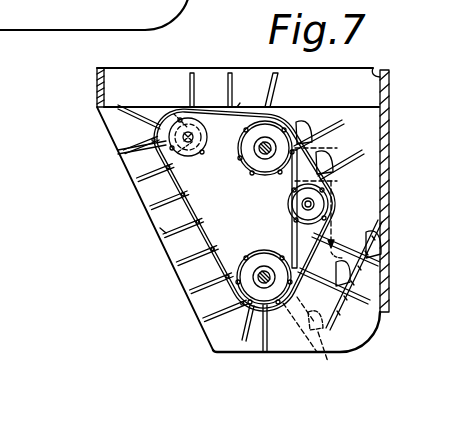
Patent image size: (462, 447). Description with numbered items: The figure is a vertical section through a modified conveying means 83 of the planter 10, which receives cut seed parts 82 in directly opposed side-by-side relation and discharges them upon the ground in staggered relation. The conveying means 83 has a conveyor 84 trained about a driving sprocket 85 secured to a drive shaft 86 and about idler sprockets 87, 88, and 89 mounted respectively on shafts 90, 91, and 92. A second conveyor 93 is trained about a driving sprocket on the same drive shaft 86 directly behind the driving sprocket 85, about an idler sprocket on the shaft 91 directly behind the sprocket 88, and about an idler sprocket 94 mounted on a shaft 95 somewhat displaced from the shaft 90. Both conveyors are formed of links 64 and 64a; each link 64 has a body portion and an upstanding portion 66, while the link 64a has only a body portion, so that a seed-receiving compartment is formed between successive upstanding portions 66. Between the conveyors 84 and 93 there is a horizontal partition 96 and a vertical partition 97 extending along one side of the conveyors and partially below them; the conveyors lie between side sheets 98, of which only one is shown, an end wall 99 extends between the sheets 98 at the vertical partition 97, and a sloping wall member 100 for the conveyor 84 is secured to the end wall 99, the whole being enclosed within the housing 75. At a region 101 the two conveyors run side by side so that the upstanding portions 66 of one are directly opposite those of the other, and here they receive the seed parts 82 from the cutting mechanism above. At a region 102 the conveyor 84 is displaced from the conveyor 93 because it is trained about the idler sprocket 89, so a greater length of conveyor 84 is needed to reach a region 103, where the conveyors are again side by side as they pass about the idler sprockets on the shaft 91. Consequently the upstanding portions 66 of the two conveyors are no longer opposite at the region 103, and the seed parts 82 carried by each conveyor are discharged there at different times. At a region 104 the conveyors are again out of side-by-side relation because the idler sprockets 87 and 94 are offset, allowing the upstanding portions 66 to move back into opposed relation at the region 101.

The machine frame 10 is at (18, 24).
The housing 75 is at (97, 86).
The link 64 is at (193, 73).
The link 64a is at (230, 73).
The horizontal partition 96 is at (276, 73).
The region 101 is at (238, 107).
The conveyor 93 is at (152, 154).
The shaft 90 is at (194, 134).
The idler sprocket 87 is at (192, 152).
The shaft 95 is at (184, 108).
The idler sprocket 94 is at (158, 140).
The driving sprocket 85 is at (250, 162).
The drive shaft 86 is at (264, 160).
The shaft 92 is at (305, 208).
The idler sprocket 89 is at (290, 204).
The idler sprocket 88 is at (256, 253).
The shaft 91 is at (266, 252).
The upstanding portions 66 is at (176, 254).
The region 104 is at (158, 226).
The conveying means 83 is at (130, 200).
The seed parts 82 is at (332, 140).
The conveyor 84 is at (283, 114).
The region 102 is at (340, 179).
The vertical partition 97 is at (364, 182).
The end wall 99 is at (386, 272).
The sloping wall member 100 is at (372, 284).
The side sheets 98 is at (206, 320).
The region 103 is at (275, 308).